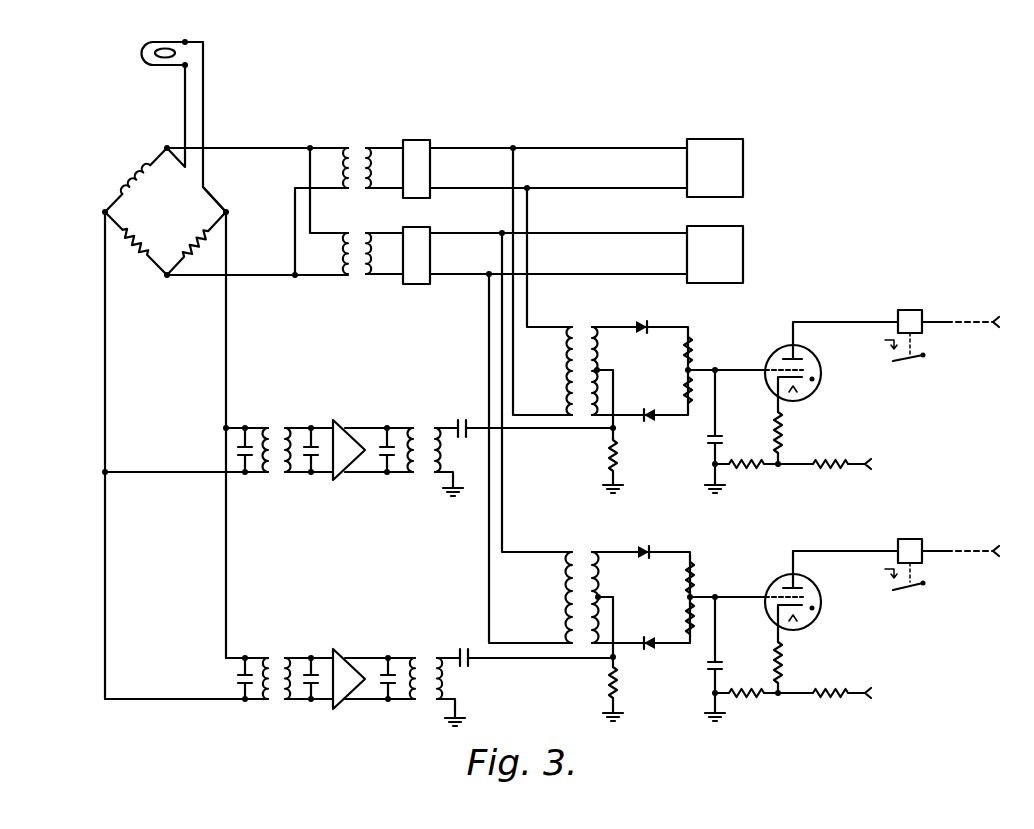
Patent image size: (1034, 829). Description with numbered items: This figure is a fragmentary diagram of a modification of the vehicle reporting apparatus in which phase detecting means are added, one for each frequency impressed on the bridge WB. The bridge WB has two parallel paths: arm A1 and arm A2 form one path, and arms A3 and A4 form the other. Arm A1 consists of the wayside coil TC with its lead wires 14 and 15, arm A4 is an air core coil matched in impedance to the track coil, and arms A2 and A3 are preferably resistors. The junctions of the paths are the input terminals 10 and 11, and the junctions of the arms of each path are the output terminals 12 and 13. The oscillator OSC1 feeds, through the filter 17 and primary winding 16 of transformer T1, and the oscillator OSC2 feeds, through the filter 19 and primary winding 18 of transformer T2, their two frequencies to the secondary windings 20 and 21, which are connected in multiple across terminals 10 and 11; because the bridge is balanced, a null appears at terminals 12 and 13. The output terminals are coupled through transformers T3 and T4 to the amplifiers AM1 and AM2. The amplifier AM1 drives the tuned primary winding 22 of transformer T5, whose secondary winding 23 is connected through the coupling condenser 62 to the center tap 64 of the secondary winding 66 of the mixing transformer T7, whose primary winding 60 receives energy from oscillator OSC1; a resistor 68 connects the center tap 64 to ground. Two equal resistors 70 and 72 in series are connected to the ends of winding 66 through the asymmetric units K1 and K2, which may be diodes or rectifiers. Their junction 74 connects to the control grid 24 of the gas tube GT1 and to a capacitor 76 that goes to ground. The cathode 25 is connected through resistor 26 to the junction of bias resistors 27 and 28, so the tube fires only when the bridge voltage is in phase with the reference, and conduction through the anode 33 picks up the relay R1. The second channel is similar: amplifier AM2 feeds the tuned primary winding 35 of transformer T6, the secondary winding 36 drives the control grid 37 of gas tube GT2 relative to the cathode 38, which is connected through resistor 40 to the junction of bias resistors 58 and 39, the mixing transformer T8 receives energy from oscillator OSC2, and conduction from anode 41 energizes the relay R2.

The wayside coil TC is at (152, 50).
The bridge WB is at (206, 411).
The arm A1 is at (224, 194).
The arm A2 is at (196, 243).
The arm A3 is at (135, 243).
The arm A4 is at (129, 178).
The input terminal 10 is at (245, 137).
The input terminal 11 is at (167, 277).
The output terminal 12 is at (104, 212).
The output terminal 13 is at (228, 212).
The lead wire 14 is at (184, 99).
The lead wire 15 is at (204, 99).
The primary winding 16 is at (368, 174).
The filter 17 is at (430, 171).
The primary winding 18 is at (368, 260).
The filter 19 is at (430, 257).
The secondary winding 20 is at (347, 175).
The secondary winding 21 is at (347, 258).
The tuned primary winding 22 is at (412, 470).
The secondary winding 23 is at (439, 458).
The control grid 24 is at (806, 365).
The cathode 25 is at (777, 380).
The resistor 26 is at (784, 430).
The resistor 27 is at (840, 461).
The resistor 28 is at (755, 461).
The anode of gas tube GT1 33 is at (801, 353).
The tuned primary winding 35 is at (418, 700).
The secondary winding 36 is at (443, 686).
The control grid 37 is at (806, 594).
The cathode 38 is at (777, 608).
The resistor 39 is at (845, 690).
The resistor 40 is at (784, 659).
The anode 41 is at (803, 582).
The resistor 58 is at (755, 690).
The primary winding 60 is at (567, 396).
The coupling condenser 62 is at (468, 422).
The center tap 64 is at (600, 369).
The secondary winding 66 is at (597, 332).
The resistor 68 is at (608, 454).
The resistor 70 is at (691, 353).
The resistor 72 is at (686, 394).
The junction 74 is at (686, 370).
The capacitor 76 is at (720, 437).
The transformer T1 is at (347, 200).
The transformer T2 is at (359, 241).
The coupling transformer T3 is at (283, 432).
The coupling transformer T4 is at (283, 662).
The output transformer T5 is at (411, 454).
The transformer T6 is at (479, 683).
The mixing transformer T7 is at (645, 367).
The mixing transformer T8 is at (585, 558).
The amplifier AM1 is at (343, 424).
The amplifier AM2 is at (345, 651).
The oscillator OSC1 is at (732, 148).
The oscillator OSC2 is at (732, 235).
The gas tube GT1 is at (811, 367).
The gas tube GT2 is at (812, 596).
The asymmetric unit K1 is at (647, 325).
The asymmetric unit K2 is at (648, 421).
The relay R1 is at (951, 324).
The relay R2 is at (951, 553).